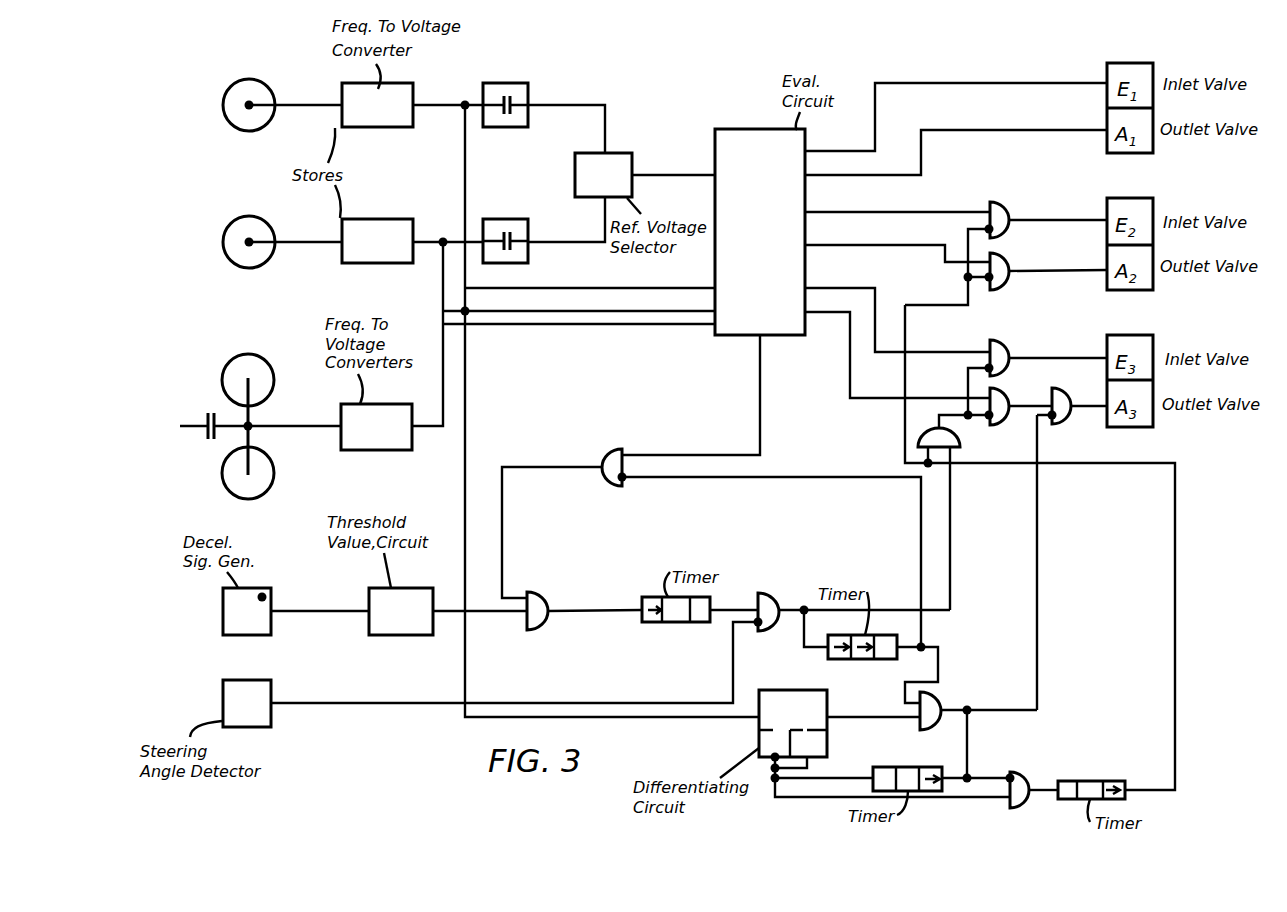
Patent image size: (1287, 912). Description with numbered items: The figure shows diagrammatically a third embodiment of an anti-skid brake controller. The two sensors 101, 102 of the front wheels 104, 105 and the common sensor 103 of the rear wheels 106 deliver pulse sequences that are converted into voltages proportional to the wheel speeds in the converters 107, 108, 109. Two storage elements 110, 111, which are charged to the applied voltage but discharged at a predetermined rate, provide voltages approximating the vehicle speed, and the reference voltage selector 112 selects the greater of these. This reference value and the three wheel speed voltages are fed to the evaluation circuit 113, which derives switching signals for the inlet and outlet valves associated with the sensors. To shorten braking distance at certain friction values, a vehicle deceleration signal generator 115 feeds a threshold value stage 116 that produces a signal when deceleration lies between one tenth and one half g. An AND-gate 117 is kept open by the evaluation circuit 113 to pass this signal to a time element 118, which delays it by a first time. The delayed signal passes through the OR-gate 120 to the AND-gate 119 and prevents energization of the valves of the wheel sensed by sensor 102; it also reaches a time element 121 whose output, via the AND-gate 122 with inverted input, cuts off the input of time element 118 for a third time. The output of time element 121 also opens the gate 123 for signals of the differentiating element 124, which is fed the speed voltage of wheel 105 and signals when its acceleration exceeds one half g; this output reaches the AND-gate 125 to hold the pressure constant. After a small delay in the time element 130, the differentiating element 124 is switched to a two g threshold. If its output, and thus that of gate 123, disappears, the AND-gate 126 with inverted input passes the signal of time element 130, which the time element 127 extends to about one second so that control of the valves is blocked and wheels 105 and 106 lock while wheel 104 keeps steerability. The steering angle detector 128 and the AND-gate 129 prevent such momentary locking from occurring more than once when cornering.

The sensor 101 is at (246, 109).
The sensor 102 is at (245, 248).
The common sensor 103 is at (243, 428).
The front wheel 104 is at (262, 131).
The front wheel 105 is at (261, 266).
The rear wheels 106 is at (263, 457).
The converter 107 is at (393, 128).
The converter 108 is at (357, 264).
The converter 109 is at (392, 453).
The storage element 110 is at (528, 90).
The storage element 111 is at (528, 253).
The reference voltage selector 112 is at (622, 153).
The evaluation circuit 113 is at (760, 232).
The vehicle deceleration signal generator 115 is at (272, 597).
The threshold value stage 116 is at (413, 637).
The AND-gate 117 is at (548, 596).
The time element 118 is at (670, 623).
The AND-gate 119 is at (997, 400).
The OR-gate 120 is at (960, 438).
The time element 121 is at (867, 660).
The AND-gate with inverted input 122 is at (607, 487).
The AND-gate 123 is at (937, 705).
The differentiating element 124 is at (759, 723).
The AND-gate 125 is at (1063, 422).
The AND-gate with inverted input 126 is at (1018, 772).
The time element 127 is at (1083, 781).
The steering angle detecting element 128 is at (272, 727).
The AND-gate 129 is at (782, 590).
The time element 130 is at (900, 767).